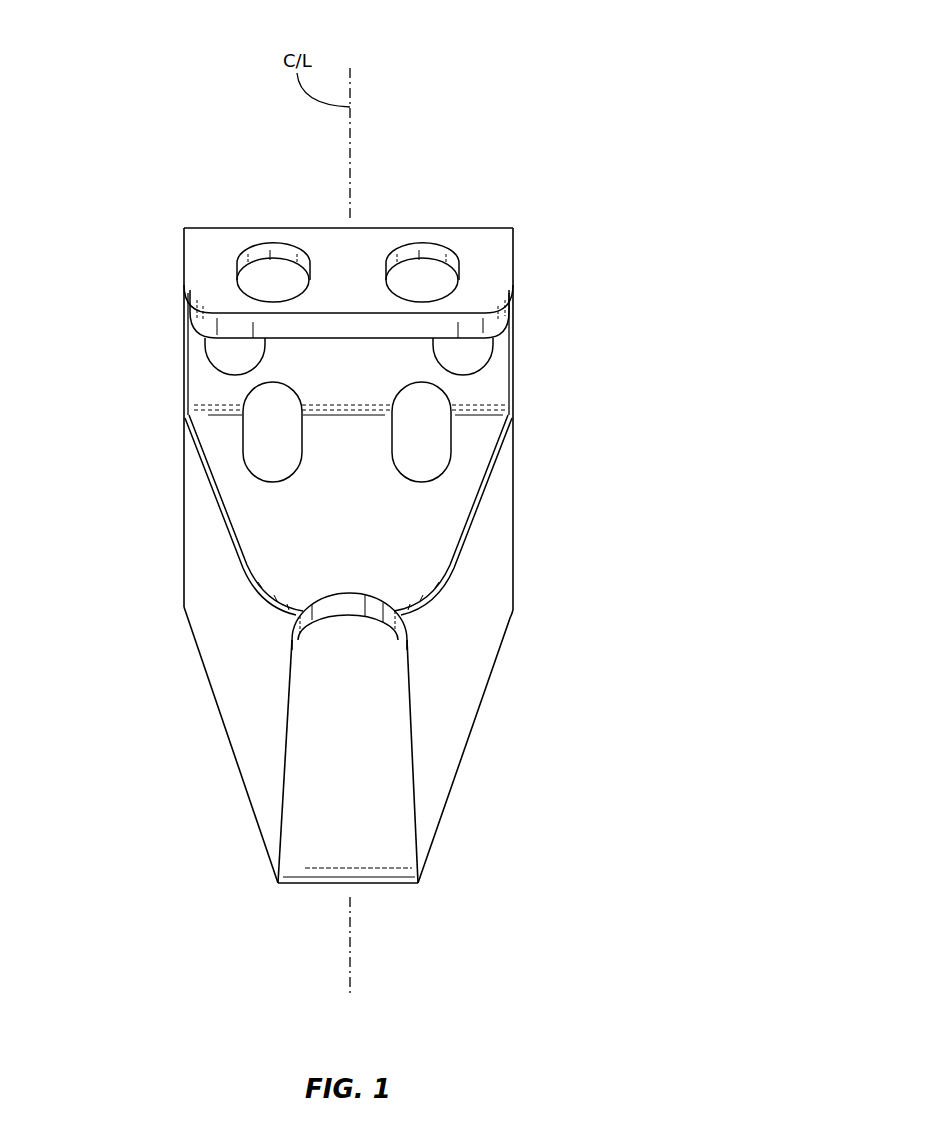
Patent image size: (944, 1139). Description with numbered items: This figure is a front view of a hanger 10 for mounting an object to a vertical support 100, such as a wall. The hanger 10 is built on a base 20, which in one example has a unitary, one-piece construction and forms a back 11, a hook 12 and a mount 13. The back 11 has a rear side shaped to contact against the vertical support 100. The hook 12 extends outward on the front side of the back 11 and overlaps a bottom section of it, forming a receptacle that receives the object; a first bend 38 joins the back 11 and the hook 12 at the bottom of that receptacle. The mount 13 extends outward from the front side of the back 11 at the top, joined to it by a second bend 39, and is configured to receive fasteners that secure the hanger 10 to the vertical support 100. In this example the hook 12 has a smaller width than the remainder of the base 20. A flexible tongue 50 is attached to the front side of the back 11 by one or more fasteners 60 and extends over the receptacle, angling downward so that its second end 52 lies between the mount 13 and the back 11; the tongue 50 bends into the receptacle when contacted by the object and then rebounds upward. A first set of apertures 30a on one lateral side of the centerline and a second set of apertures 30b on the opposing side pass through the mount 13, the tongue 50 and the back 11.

The vertical support 100 is at (160, 25).
The hanger 10 is at (408, 172).
The back 11 is at (170, 615).
The hook 12 is at (203, 795).
The mount 13 is at (590, 320).
The base 20 is at (462, 592).
The first set of apertures 30a is at (262, 250).
The second set of apertures 30b is at (433, 255).
The first bend 38 is at (317, 885).
The second bend 39 is at (430, 228).
The tongue 50 is at (232, 487).
The second end 52 is at (403, 610).
The fasteners 60 is at (238, 355).